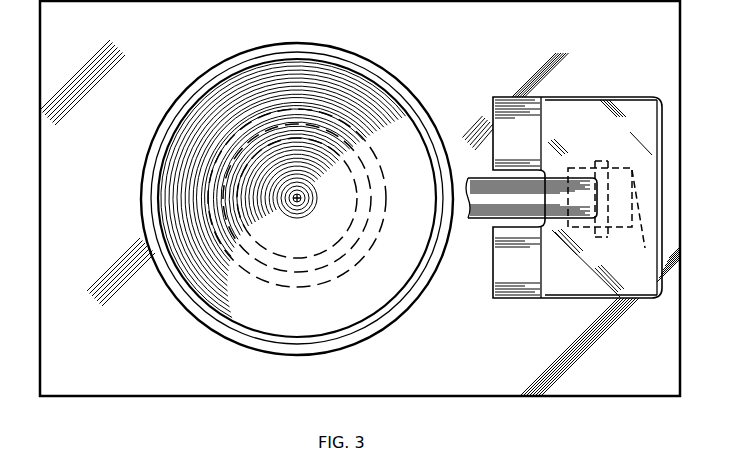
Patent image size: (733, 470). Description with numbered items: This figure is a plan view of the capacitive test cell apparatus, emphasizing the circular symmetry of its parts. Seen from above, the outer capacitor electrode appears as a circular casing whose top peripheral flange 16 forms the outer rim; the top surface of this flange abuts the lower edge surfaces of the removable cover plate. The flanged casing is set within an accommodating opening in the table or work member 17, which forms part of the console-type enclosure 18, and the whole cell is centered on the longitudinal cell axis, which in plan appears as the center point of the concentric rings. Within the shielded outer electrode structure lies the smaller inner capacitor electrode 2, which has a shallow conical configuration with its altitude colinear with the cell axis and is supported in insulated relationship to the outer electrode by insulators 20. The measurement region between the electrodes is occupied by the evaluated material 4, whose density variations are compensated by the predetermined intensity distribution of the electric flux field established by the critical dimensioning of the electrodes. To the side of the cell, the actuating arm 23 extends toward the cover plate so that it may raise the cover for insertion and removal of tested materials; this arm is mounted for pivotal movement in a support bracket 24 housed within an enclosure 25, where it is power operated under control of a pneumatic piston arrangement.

The inner capacitor electrode 2 is at (390, 271).
The evaluated material 4 is at (355, 212).
The top peripheral flange 16 is at (408, 296).
The table or work member 17 is at (476, 80).
The console-type enclosure 18 is at (298, 199).
The insulators 20 is at (374, 154).
The actuating arm 23 is at (483, 213).
The support bracket 24 is at (645, 249).
The enclosure 25 is at (604, 151).